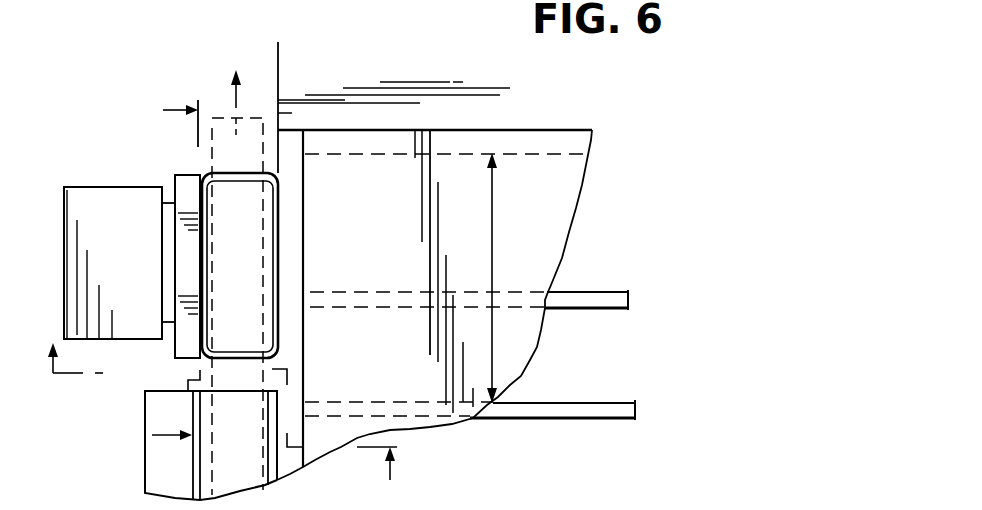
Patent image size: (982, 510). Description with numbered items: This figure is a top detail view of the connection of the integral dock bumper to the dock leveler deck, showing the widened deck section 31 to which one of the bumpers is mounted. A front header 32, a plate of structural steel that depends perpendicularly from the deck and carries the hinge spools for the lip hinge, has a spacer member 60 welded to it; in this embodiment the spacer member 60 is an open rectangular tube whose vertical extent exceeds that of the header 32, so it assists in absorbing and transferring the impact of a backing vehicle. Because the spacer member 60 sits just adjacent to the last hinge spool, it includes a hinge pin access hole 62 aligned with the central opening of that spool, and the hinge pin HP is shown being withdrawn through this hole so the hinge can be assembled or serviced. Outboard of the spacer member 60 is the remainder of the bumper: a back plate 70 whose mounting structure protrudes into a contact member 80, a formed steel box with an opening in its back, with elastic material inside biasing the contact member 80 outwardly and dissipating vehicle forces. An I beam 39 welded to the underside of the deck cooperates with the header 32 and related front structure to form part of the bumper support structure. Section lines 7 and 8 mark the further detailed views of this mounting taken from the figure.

The section line 7- 7 is at (170, 278).
The section line 8- 8 is at (224, 416).
The widened deck section 31 is at (511, 278).
The front header 32 is at (292, 230).
The I beam 39 is at (608, 308).
The spacer member 60 is at (280, 183).
The hinge pin access hole 62 is at (267, 173).
The back plate 70 is at (175, 175).
The contact member 80 is at (85, 190).
The hinge pin HP is at (218, 132).